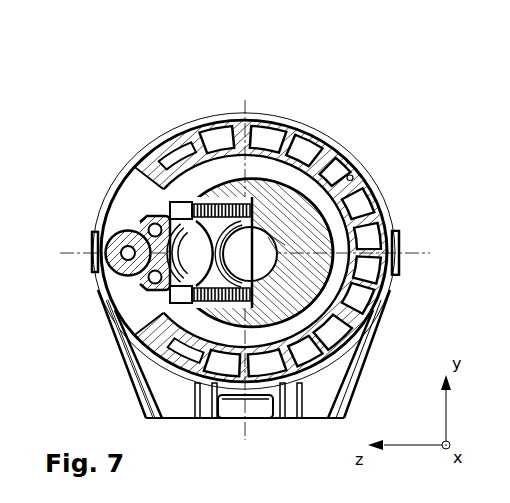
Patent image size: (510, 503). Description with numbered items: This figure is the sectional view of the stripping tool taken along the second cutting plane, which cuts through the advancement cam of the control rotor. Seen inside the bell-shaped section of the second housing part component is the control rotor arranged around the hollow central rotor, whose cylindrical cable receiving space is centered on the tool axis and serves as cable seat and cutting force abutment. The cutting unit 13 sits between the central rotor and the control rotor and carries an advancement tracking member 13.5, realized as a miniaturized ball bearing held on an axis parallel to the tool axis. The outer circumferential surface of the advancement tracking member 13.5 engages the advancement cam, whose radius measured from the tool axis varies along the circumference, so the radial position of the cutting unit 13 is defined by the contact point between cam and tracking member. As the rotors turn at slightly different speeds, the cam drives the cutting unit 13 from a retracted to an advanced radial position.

The cutting unit 13 is at (133, 207).
The advancement tracking member 13.5 is at (128, 232).